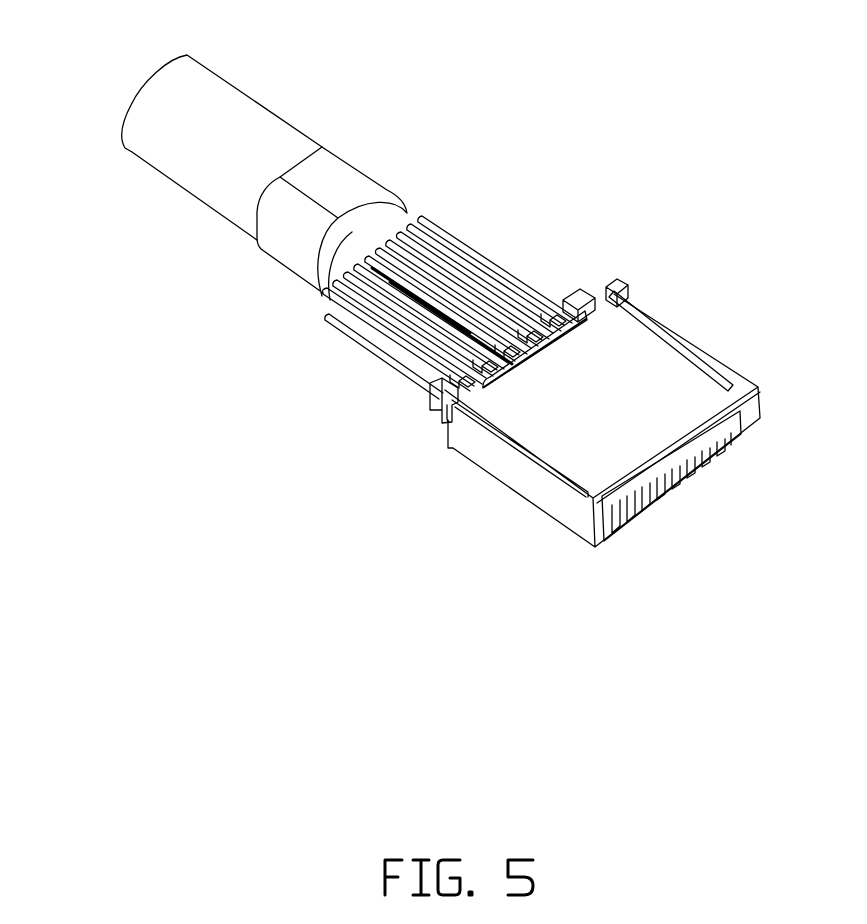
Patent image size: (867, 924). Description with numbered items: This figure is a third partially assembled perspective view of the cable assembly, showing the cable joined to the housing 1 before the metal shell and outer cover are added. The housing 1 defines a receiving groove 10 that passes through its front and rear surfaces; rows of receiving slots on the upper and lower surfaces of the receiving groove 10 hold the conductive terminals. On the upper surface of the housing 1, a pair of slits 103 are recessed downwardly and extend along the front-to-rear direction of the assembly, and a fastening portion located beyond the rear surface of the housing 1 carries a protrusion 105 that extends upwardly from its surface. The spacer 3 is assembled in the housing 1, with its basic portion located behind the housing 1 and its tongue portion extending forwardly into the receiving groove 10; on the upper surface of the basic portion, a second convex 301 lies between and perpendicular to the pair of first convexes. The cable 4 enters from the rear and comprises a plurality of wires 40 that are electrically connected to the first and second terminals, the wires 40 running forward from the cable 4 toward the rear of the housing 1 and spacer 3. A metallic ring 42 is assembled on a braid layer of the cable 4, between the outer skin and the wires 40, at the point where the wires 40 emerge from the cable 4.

The housing 1 is at (513, 467).
The receiving groove 10 is at (735, 432).
The slits 103 is at (667, 342).
The protrusion 105 is at (613, 293).
The spacer 3 is at (430, 400).
The second convex 301 is at (540, 347).
The cable 4 is at (222, 130).
The wires 40 is at (455, 242).
The metallic ring 42 is at (327, 182).